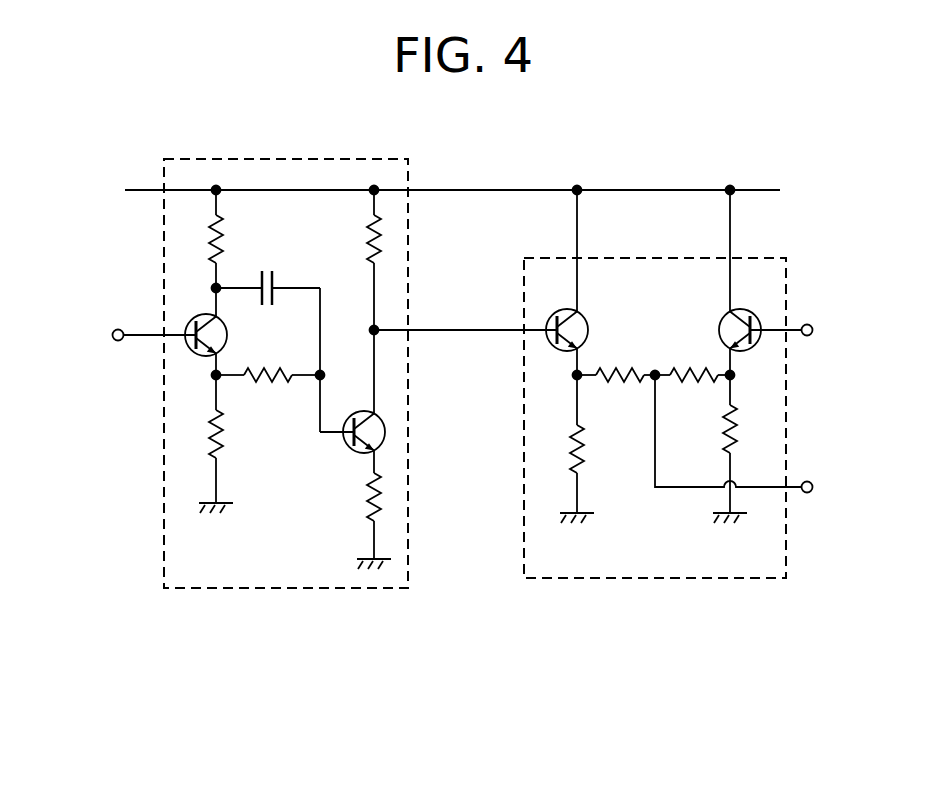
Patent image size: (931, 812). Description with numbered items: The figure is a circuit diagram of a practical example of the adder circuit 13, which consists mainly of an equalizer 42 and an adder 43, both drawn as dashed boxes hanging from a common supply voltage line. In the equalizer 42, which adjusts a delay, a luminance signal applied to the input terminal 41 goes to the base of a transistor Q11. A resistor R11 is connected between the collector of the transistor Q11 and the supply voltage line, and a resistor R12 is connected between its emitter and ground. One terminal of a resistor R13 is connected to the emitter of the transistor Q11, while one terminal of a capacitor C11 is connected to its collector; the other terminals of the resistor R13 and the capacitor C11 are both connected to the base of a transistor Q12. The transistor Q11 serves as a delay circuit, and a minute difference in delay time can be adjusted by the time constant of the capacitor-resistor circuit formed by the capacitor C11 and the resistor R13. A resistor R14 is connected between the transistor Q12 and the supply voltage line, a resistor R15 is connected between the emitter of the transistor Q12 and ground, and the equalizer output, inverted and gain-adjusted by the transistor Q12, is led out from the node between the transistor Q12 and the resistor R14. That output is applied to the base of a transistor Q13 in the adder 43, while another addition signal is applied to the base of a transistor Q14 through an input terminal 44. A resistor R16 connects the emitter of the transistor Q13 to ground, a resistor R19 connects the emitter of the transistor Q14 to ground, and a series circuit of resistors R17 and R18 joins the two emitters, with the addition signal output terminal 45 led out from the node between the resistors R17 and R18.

The adder circuit 13 is at (434, 606).
The input terminal 41 is at (118, 329).
The equalizer 42 is at (237, 158).
The adder 43 is at (787, 286).
The input terminal 44 is at (807, 337).
The addition signal output terminal 45 is at (807, 494).
The resistor R11 is at (220, 237).
The resistor R12 is at (222, 447).
The resistor R13 is at (273, 381).
The resistor R14 is at (368, 246).
The resistor R15 is at (370, 516).
The resistor R16 is at (582, 445).
The resistor R17 is at (620, 381).
The resistor R18 is at (676, 368).
The resistor R19 is at (722, 440).
The capacitor C11 is at (278, 288).
The transistor Q11 is at (228, 335).
The transistor Q12 is at (351, 449).
The transistor Q13 is at (588, 322).
The transistor Q14 is at (724, 314).